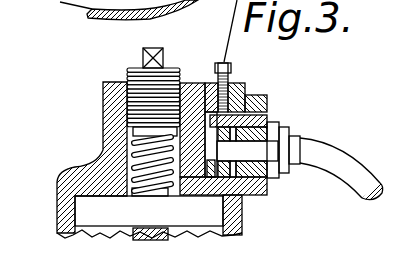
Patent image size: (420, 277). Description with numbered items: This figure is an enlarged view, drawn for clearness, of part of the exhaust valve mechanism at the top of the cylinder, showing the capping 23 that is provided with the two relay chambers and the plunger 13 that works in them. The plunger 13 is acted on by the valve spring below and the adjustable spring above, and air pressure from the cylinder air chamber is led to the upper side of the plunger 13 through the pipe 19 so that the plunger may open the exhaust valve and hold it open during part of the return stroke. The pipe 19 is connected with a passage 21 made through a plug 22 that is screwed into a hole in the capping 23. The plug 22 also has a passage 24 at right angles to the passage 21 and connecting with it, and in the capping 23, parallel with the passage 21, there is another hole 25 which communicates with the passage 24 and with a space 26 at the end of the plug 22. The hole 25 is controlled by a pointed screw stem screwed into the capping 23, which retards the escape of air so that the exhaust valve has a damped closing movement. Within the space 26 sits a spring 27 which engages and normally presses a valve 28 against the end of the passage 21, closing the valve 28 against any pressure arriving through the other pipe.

The plunger 13 is at (84, 209).
The pipe 19 is at (336, 153).
The passage 21 is at (290, 138).
The plug 22 is at (268, 138).
The capping 23 is at (100, 144).
The passage 24 is at (254, 118).
The hole 25 is at (243, 110).
The space 26 is at (203, 138).
The spring 27 is at (200, 137).
The valve 28 is at (186, 194).